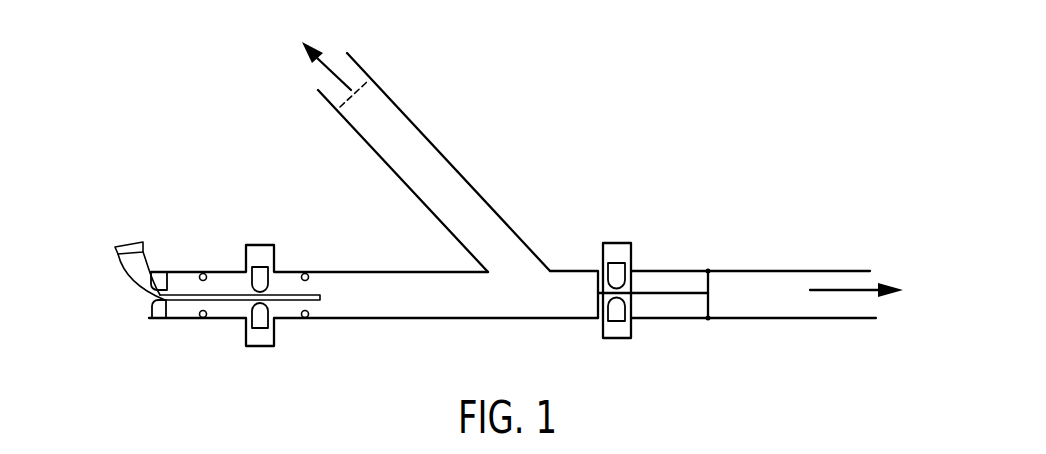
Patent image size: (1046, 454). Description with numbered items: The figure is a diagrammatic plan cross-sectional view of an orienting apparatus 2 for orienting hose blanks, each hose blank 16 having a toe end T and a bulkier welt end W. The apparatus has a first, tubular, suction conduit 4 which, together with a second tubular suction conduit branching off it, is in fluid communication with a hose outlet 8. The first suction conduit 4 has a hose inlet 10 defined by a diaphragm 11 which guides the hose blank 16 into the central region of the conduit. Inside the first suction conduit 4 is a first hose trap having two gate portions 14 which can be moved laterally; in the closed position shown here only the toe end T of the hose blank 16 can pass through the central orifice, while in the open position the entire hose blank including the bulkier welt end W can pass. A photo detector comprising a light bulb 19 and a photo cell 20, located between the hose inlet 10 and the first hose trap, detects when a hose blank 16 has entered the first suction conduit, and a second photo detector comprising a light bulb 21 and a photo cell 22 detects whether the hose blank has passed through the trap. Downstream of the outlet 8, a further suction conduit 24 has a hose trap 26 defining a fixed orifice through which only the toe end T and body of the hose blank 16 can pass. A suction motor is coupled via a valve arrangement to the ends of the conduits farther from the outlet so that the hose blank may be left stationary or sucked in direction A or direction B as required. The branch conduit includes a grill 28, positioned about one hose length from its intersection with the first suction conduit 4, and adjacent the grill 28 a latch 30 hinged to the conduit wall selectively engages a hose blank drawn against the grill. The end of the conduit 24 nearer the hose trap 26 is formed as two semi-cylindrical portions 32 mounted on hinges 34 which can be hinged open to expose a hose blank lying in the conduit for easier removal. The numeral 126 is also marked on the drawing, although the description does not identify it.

The orienting apparatus 2 is at (569, 189).
The first suction conduit 4 is at (360, 320).
The hose outlet 8 is at (572, 282).
The hose inlet 10 is at (148, 305).
The diaphragm 11 is at (150, 270).
The gate portions 14 is at (252, 288).
The hose blank 16 is at (120, 266).
The light bulb 19 is at (204, 320).
The photo cell 20 is at (203, 272).
The light bulb 21 is at (304, 320).
The photo cell 22 is at (307, 272).
The further suction conduit 24 is at (775, 269).
The hose trap 26 is at (621, 243).
The grill 28 is at (362, 90).
The latch 30 is at (396, 117).
The semi-cylindrical portions 32 is at (660, 270).
The hinges 34 is at (708, 271).
The branch conduit 126 is at (398, 180).
The welt end W is at (127, 242).
The toe end T is at (337, 274).
The direction A is at (869, 280).
The direction B is at (326, 51).